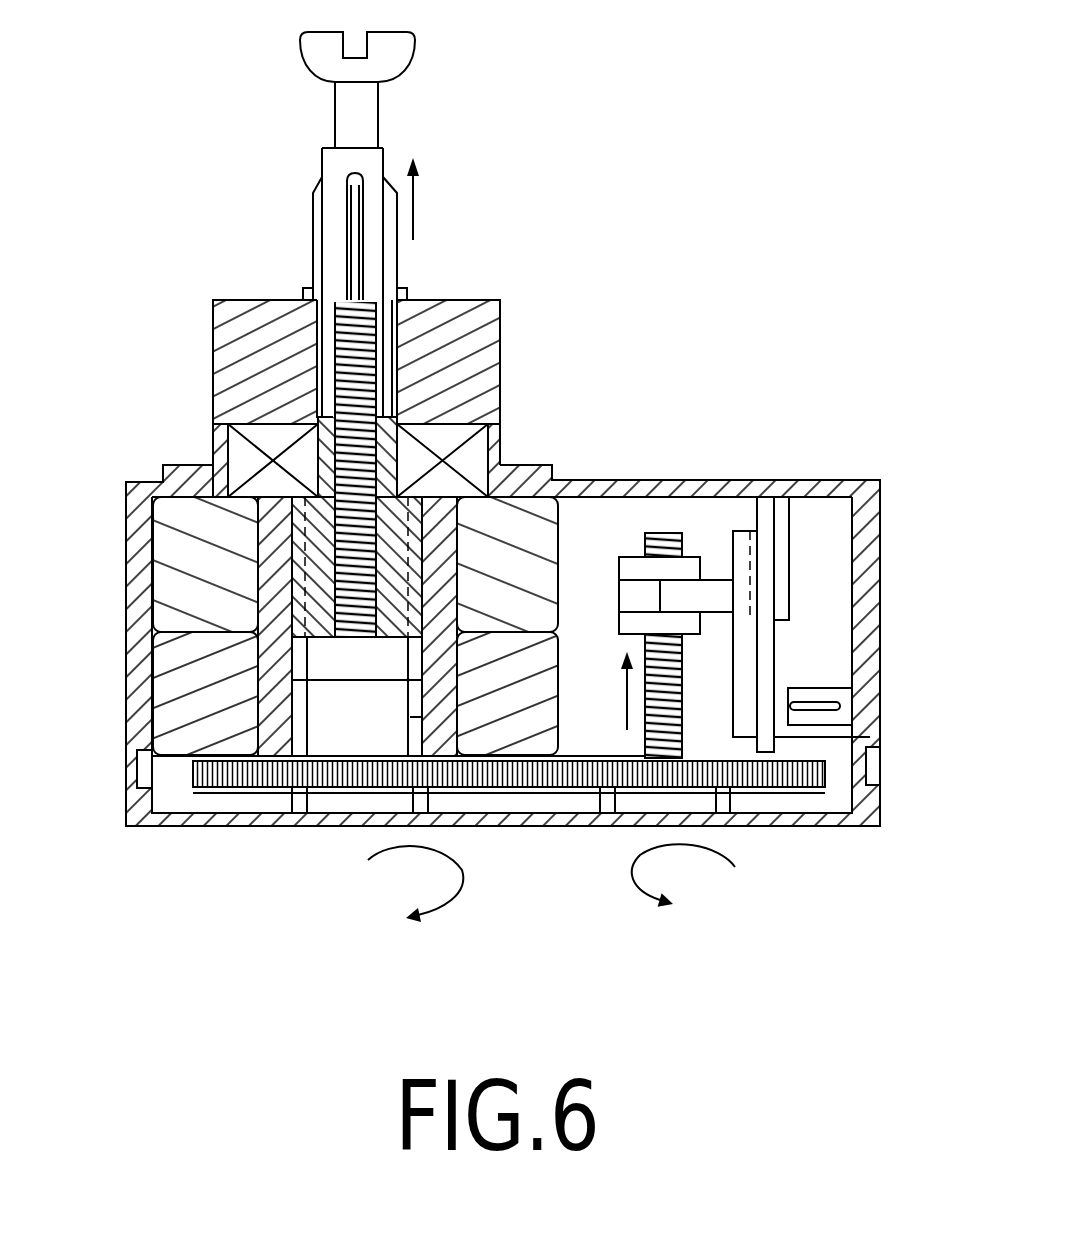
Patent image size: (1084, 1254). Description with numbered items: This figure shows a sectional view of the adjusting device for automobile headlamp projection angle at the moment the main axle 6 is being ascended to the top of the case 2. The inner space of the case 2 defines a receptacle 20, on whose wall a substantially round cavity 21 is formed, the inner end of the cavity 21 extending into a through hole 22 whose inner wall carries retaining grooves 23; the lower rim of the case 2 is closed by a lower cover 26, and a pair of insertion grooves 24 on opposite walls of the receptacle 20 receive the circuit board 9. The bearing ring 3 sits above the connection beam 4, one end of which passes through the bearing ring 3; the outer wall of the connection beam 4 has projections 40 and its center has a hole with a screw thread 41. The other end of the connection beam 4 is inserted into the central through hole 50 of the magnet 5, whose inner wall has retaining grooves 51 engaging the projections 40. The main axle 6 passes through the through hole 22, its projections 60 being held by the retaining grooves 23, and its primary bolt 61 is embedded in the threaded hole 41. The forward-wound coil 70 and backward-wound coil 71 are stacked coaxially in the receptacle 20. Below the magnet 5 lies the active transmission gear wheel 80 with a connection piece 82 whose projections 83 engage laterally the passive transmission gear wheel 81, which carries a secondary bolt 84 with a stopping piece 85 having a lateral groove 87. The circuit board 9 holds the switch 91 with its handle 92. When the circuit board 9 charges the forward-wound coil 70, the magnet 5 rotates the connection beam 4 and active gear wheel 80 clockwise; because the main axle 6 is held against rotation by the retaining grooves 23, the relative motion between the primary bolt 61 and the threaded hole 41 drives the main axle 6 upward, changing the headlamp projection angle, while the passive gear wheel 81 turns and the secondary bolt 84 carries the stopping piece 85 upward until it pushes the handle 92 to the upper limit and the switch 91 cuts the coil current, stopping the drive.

The case 2 is at (870, 553).
The bearing ring 3 is at (472, 450).
The connection beam 4 is at (321, 472).
The magnet 5 is at (273, 651).
The main axle 6 is at (365, 125).
The circuit board 9 is at (770, 567).
The receptacle 20 is at (592, 733).
The round cavity 21 is at (443, 423).
The through hole 22 is at (382, 375).
The retaining grooves 23 is at (395, 345).
The insertion grooves 24 is at (778, 608).
The lower cover 26 is at (822, 818).
The projections 40 is at (262, 525).
The hole with a screw thread 41 is at (322, 428).
The central through hole 50 is at (345, 655).
The retaining grooves 51 is at (143, 763).
The projections 60 is at (390, 260).
The primary bolt 61 is at (337, 337).
The forward-wound coil 70 is at (175, 548).
The backward-wound coil 71 is at (187, 703).
The active transmission gear wheel 80 is at (488, 778).
The passive transmission gear wheel 81 is at (748, 778).
The connection piece 82 is at (358, 735).
The projections 83 is at (305, 740).
The secondary bolt 84 is at (667, 542).
The stopping piece 85 is at (638, 567).
The lateral groove 87 is at (622, 602).
The switch 91 is at (742, 540).
The handle 92 is at (718, 598).